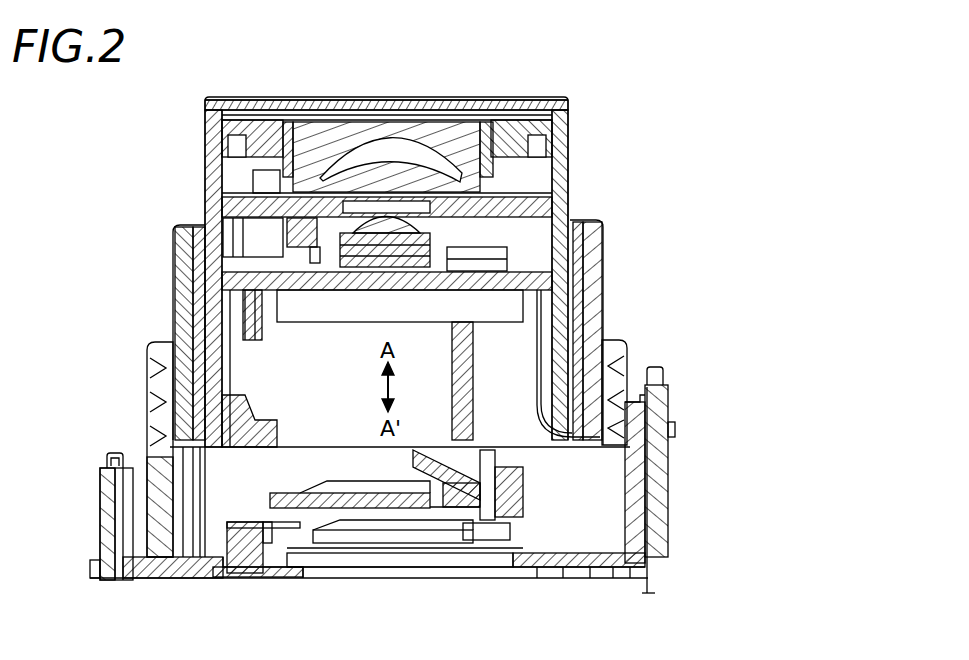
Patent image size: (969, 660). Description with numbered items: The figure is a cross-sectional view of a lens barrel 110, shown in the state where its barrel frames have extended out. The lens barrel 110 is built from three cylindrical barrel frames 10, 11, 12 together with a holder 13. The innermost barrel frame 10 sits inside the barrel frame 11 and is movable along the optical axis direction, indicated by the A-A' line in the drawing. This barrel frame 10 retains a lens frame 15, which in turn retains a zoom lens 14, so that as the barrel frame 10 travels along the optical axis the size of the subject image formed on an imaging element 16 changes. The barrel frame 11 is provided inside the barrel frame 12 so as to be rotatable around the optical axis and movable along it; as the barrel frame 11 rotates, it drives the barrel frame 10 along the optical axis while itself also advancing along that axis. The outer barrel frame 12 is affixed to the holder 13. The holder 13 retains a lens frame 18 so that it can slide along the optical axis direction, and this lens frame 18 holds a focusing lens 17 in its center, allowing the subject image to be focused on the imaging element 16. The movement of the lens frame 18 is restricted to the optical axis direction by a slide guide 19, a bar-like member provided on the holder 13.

The barrel frame 10 is at (205, 175).
The barrel frame 11 is at (178, 280).
The barrel frame 12 is at (173, 400).
The holder 13 is at (100, 517).
The zoom lens 14 is at (440, 237).
The lens frame 15 is at (455, 247).
The imaging element 16 is at (320, 553).
The focusing lens 17 is at (420, 507).
The lens frame 18 is at (272, 495).
The slide guide 19 is at (525, 462).
The lens barrel 110 is at (627, 288).